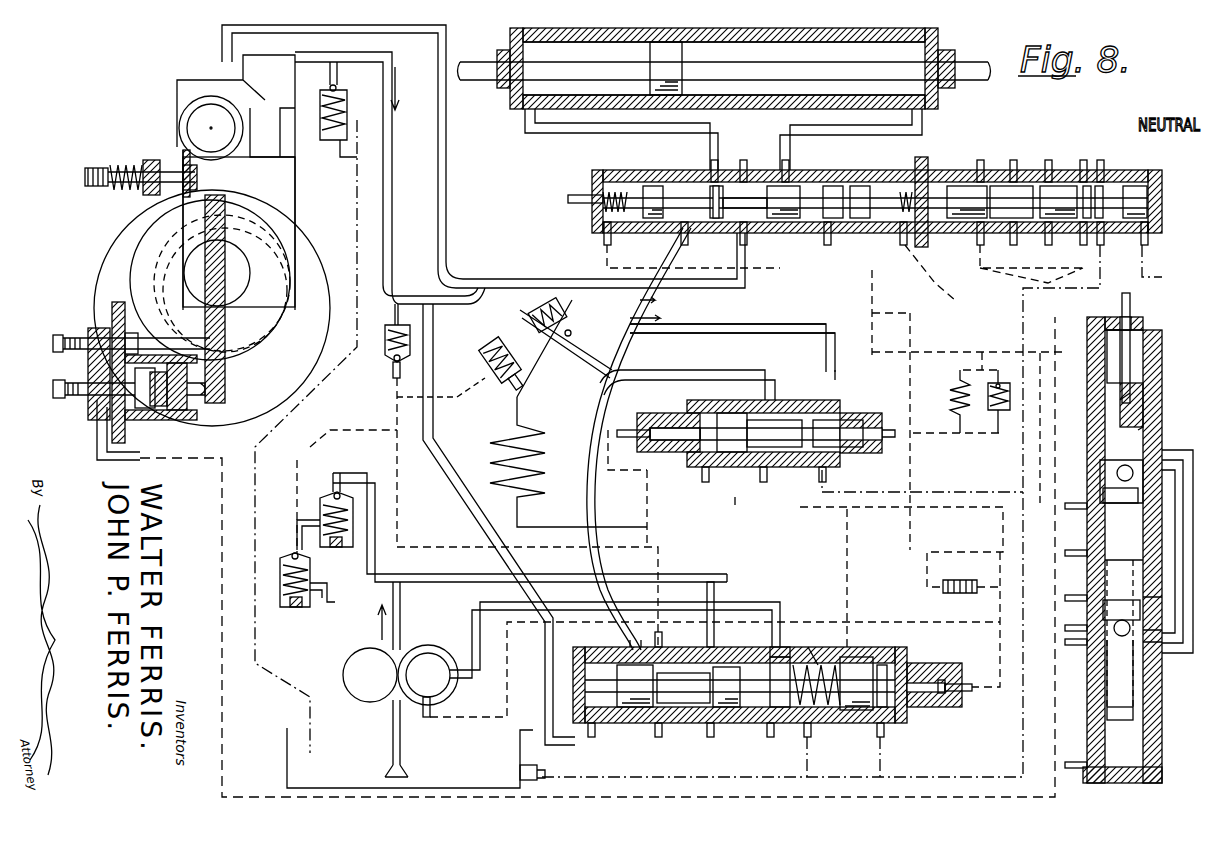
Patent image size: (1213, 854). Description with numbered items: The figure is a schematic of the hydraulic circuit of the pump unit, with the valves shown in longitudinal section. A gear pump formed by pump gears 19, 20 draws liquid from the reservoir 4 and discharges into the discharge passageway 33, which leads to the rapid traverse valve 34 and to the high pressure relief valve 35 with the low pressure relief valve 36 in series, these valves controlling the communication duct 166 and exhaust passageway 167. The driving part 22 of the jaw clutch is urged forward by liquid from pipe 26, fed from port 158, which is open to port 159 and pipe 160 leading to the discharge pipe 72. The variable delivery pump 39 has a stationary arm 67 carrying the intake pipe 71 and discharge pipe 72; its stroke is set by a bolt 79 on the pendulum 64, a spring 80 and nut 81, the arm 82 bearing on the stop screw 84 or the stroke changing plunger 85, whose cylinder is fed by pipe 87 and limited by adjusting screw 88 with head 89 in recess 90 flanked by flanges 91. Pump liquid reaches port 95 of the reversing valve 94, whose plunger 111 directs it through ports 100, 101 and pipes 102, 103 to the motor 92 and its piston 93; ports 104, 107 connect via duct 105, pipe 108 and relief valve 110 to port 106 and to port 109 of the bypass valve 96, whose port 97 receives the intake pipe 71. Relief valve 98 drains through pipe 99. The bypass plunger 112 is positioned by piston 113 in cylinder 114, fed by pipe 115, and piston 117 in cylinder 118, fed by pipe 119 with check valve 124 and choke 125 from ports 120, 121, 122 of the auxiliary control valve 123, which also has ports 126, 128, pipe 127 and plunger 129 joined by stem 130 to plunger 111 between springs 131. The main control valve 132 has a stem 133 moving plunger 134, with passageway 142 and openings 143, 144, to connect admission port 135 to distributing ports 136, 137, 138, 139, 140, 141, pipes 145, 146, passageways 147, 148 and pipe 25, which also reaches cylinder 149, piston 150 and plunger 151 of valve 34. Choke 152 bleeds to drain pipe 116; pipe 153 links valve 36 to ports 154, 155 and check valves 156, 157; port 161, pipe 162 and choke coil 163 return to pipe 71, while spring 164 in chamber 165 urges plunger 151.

The sump or reservoir 4 is at (290, 745).
The pump gear 19 is at (367, 700).
The pump gear 20 is at (450, 642).
The driving part of jaw clutch 22 is at (417, 715).
The pipe 25 is at (738, 497).
The pipe 26 is at (470, 606).
The discharge passageway 33 is at (466, 576).
The rapid traverse valve 34 is at (900, 725).
The high pressure relief valve 35 is at (345, 547).
The low pressure relief valve 36 is at (297, 610).
The variable delivery pump 39 is at (92, 250).
The pendulum 64 is at (239, 232).
The arm 67 is at (190, 82).
The intake pipe 71 is at (222, 46).
The discharge pipe 72 is at (376, 56).
The bolt 79 is at (90, 160).
The helical compression spring 80 is at (150, 160).
The nut 81 is at (112, 165).
The arm 82 is at (230, 399).
The stop screw 84 is at (72, 335).
The stroke changing plunger 85 is at (200, 395).
The pipe 87 is at (148, 460).
The adjusting screw 88 is at (65, 398).
The enlarged head 89 is at (150, 410).
The recess 90 is at (170, 405).
The inward flanges 91 is at (122, 425).
The hydraulic motor 92 is at (938, 40).
The piston 93 is at (666, 68).
The reversing valve 94 is at (592, 178).
The port 95 is at (745, 172).
The bypass valve 96 is at (840, 402).
The port 97 is at (755, 470).
The high pressure relief valve 98 is at (340, 145).
The drain pipe 99 is at (357, 191).
The port 100 is at (712, 172).
The port 101 is at (795, 172).
The pipe 102 is at (660, 126).
The pipe 103 is at (875, 126).
The port 104 is at (683, 236).
The duct 105 is at (675, 258).
The port 106 is at (640, 722).
The port 107 is at (828, 236).
The pipe 108 is at (815, 318).
The port 109 is at (805, 470).
The relief valve 110 is at (560, 300).
The plunger 111 is at (745, 203).
The plunger 112 is at (759, 432).
The small piston 113 is at (680, 415).
The cylinder 114 is at (668, 445).
The pipe 115 is at (640, 505).
The drain pipe 116 is at (1145, 272).
The piston 117 is at (838, 433).
The cylinder 118 is at (870, 455).
The pipe 119 is at (1038, 265).
The port 120 is at (980, 172).
The port 121 is at (1047, 172).
The port 122 is at (1086, 170).
The auxiliary control valve 123 is at (1138, 162).
The check valve 124 is at (998, 420).
The choke 125 is at (950, 390).
The port 126 is at (1018, 162).
The pipe 127 is at (912, 316).
The port 128 is at (1100, 172).
The plunger 129 is at (1011, 202).
The stem 130 is at (930, 175).
The helical compression springs 131 is at (615, 192).
The main control valve 132 is at (1160, 340).
The stem 133 is at (1132, 305).
The plunger 134 is at (1130, 697).
The admission port 135 is at (1087, 556).
The distributing port 136 is at (1087, 512).
The distributing port 137 is at (1065, 598).
The distributing port 138 is at (1120, 495).
The distributing port 139 is at (1087, 620).
The distributing port 140 is at (1148, 430).
The distributing port 141 is at (1075, 645).
The longitudinal passageway 142 is at (1140, 400).
The opening 143 is at (1125, 465).
The opening 144 is at (1121, 635).
The pipe 145 is at (607, 255).
The pipe 146 is at (905, 253).
The passageway 147 is at (1155, 445).
The passageway 148 is at (1168, 653).
The cylinder 149 is at (950, 693).
The piston 150 is at (922, 690).
The plunger 151 is at (683, 688).
The choke 152 is at (978, 578).
The pipe 153 is at (385, 425).
The port 154 is at (668, 730).
The port 155 is at (710, 722).
The check valve 156 is at (492, 362).
The check valve 157 is at (388, 360).
The port 158 is at (768, 722).
The port 159 is at (758, 650).
The pipe 160 is at (435, 318).
The port 161 is at (855, 728).
The pipe 162 is at (542, 372).
The choke coil 163 is at (490, 442).
The helical compression spring 164 is at (808, 665).
The spring chamber 165 is at (805, 737).
The communication duct 166 is at (297, 537).
The exhaust passageway 167 is at (330, 600).